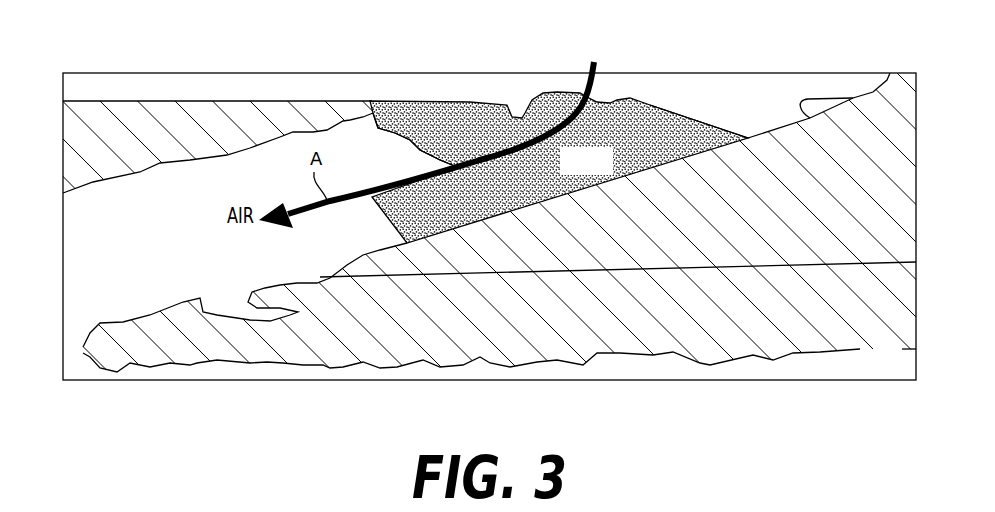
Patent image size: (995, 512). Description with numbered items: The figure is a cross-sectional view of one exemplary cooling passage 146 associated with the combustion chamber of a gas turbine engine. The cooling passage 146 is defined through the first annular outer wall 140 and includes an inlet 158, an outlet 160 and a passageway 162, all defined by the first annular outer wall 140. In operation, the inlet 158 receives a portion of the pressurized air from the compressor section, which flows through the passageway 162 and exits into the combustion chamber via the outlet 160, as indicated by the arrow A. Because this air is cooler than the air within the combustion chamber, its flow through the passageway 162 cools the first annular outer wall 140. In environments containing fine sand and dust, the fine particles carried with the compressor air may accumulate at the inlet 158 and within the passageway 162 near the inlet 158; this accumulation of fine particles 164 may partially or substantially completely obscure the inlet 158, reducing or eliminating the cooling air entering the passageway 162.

The first annular outer wall 140 is at (259, 100).
The cooling passage 146 is at (680, 89).
The inlet 158 is at (400, 103).
The outlet 160 is at (83, 353).
The passageway 162 is at (82, 251).
The accumulation of fine particles 164 is at (609, 127).